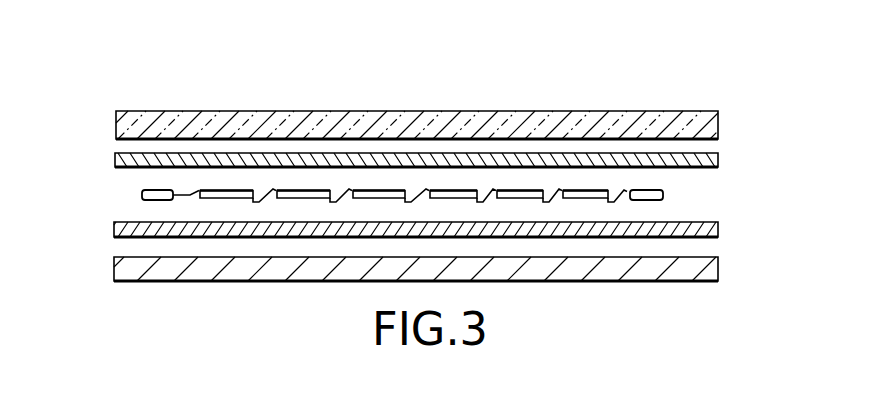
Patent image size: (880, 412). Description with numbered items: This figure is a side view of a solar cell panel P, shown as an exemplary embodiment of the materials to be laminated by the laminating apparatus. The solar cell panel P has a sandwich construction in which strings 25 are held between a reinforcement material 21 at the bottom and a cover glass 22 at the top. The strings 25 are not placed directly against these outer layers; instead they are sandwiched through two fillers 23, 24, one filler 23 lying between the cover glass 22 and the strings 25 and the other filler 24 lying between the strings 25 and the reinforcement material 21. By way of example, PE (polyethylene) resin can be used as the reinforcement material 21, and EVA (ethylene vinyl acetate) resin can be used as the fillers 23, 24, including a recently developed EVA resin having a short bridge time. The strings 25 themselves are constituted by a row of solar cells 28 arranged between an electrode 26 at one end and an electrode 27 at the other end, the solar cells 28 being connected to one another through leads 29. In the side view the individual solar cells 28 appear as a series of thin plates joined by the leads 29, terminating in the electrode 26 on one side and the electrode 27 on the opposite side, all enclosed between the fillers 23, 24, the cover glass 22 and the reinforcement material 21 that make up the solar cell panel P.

The reinforcement material 21 is at (713, 270).
The cover glass 22 is at (718, 123).
The filler 23 is at (718, 160).
The filler 24 is at (718, 230).
The strings 25 is at (142, 178).
The electrode 26 is at (144, 200).
The electrode 27 is at (483, 125).
The solar cell 28 is at (300, 190).
The leads 29 is at (353, 190).
The solar cell panel P is at (407, 84).